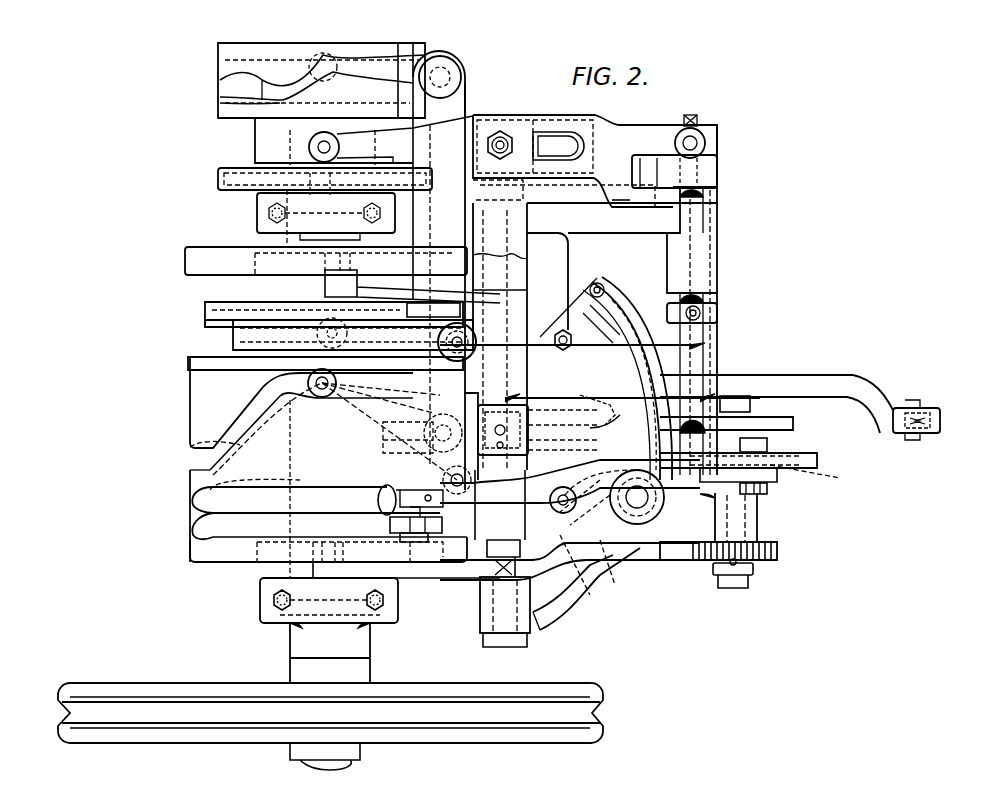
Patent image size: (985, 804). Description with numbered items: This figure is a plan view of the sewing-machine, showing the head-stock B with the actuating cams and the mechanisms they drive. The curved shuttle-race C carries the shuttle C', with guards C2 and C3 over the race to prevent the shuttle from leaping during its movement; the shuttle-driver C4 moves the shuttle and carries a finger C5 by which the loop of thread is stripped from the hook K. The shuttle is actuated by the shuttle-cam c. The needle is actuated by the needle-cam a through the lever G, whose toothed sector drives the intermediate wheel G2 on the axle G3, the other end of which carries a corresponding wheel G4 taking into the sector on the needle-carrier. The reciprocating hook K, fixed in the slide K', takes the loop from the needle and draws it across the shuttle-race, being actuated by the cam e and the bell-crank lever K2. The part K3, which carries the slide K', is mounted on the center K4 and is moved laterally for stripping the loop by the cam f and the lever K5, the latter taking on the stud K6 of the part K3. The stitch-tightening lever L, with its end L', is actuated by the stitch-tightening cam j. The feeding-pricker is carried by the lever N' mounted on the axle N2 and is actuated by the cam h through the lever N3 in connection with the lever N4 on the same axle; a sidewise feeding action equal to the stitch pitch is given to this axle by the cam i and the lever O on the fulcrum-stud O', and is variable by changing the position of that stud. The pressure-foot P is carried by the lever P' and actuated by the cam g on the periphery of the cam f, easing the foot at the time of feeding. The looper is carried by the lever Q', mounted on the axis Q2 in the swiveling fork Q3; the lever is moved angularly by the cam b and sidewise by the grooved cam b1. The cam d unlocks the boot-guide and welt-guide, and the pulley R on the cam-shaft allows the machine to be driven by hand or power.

The cam e is at (321, 171).
The bell-crank lever K2 is at (439, 84).
The cam i is at (364, 140).
The cam h is at (325, 181).
The lever N3 is at (400, 195).
The stitch-tightening cam j is at (326, 261).
The lever O is at (595, 161).
The fulcrum-stud O' is at (511, 122).
The lever N4 is at (712, 170).
The head-stock B is at (573, 286).
The axle N2 is at (692, 300).
The guard C2 is at (620, 317).
The curved shuttle-race C is at (606, 375).
The stitch-tightening lever L is at (609, 349).
The lever end block L' is at (929, 420).
The lever P' is at (600, 368).
The pressure-foot P is at (749, 403).
The lever N' is at (746, 423).
The swiveling fork Q3 is at (767, 445).
The lever Q' is at (752, 459).
The wheel G4 is at (816, 474).
The axis Q2 is at (767, 490).
The axle G3 is at (735, 527).
The intermediate wheel G2 is at (777, 552).
The lever G is at (660, 557).
The shuttle C' is at (648, 501).
The finger C5 is at (585, 510).
The guard C3 is at (598, 580).
The cam g is at (334, 312).
The cam f is at (339, 334).
The lever K5 is at (478, 345).
The stud K6 is at (570, 350).
The cam d is at (222, 360).
The shuttle-cam c is at (323, 459).
The slide K' is at (416, 434).
The reciprocating hook K is at (532, 436).
The shuttle-driver C4 is at (600, 422).
The part K3 is at (490, 473).
The center K4 is at (445, 478).
The grooved cam b1 is at (317, 498).
The cam b is at (329, 527).
The needle-cam a is at (345, 557).
The pulley R is at (330, 726).